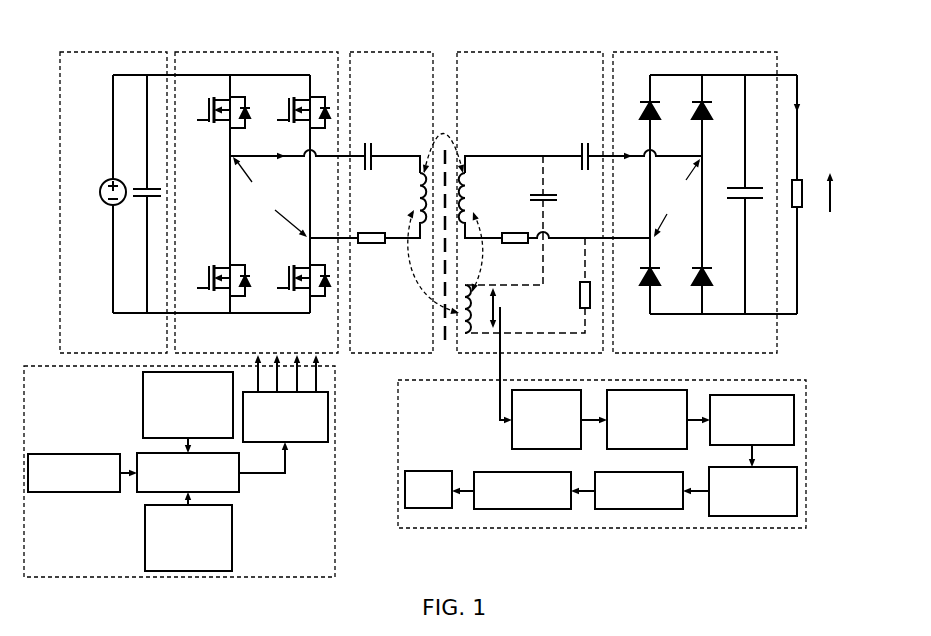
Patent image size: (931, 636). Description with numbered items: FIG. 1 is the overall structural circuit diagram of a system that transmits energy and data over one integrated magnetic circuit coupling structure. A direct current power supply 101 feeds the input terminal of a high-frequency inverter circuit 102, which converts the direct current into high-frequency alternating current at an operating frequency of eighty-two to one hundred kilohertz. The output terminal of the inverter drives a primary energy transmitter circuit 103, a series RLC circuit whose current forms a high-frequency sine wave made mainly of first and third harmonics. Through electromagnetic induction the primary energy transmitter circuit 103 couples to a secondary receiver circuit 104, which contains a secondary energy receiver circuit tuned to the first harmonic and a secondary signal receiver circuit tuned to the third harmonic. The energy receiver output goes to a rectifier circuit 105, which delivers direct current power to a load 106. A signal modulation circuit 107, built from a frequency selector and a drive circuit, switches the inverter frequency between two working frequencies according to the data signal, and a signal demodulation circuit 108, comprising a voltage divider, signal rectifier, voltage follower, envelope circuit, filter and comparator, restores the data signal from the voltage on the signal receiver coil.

The direct current power supply 101 is at (87, 52).
The high-frequency inverter circuit 102 is at (233, 52).
The primary energy transmitter circuit 103 is at (366, 52).
The secondary receiver circuit 104 is at (492, 52).
The rectifier circuit 105 is at (683, 52).
The load 106 is at (802, 177).
The signal modulation circuit 107 is at (335, 448).
The signal demodulation circuit 108 is at (786, 380).